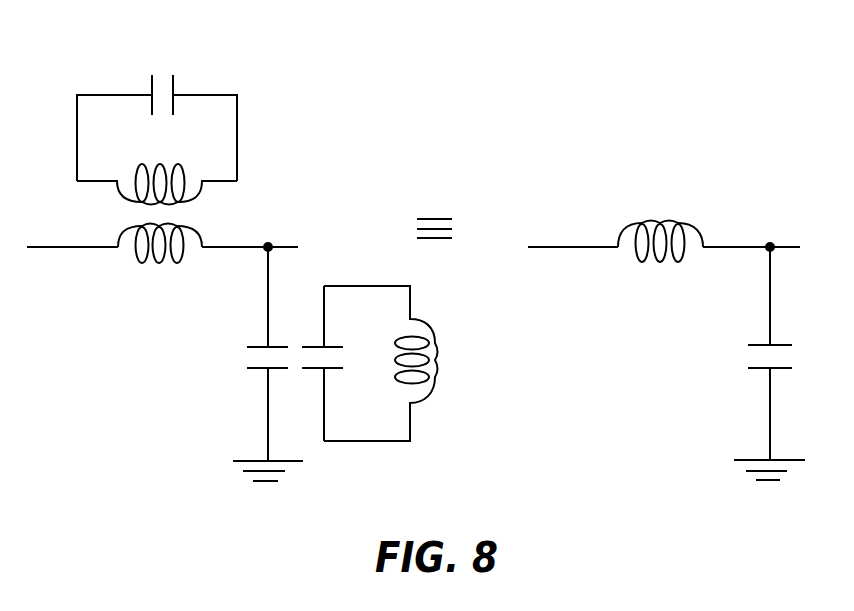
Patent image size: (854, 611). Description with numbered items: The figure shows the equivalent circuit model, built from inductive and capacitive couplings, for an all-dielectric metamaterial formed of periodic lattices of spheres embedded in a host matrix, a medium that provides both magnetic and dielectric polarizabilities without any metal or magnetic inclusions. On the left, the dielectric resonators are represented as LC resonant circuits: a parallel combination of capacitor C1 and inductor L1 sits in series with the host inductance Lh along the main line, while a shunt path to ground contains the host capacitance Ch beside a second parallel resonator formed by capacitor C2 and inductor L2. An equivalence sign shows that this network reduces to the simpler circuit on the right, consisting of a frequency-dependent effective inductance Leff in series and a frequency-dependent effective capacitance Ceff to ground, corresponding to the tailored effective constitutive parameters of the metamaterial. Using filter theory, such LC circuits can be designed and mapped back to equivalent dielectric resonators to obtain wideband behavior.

The capacitor C1 is at (157, 111).
The inductor L1 is at (157, 169).
The host inductance Lh is at (160, 262).
The host capacitance Ch is at (250, 354).
The capacitor C2 is at (338, 363).
The inductor L2 is at (395, 363).
The effective inductance Leff is at (661, 226).
The effective capacitance Ceff is at (728, 353).